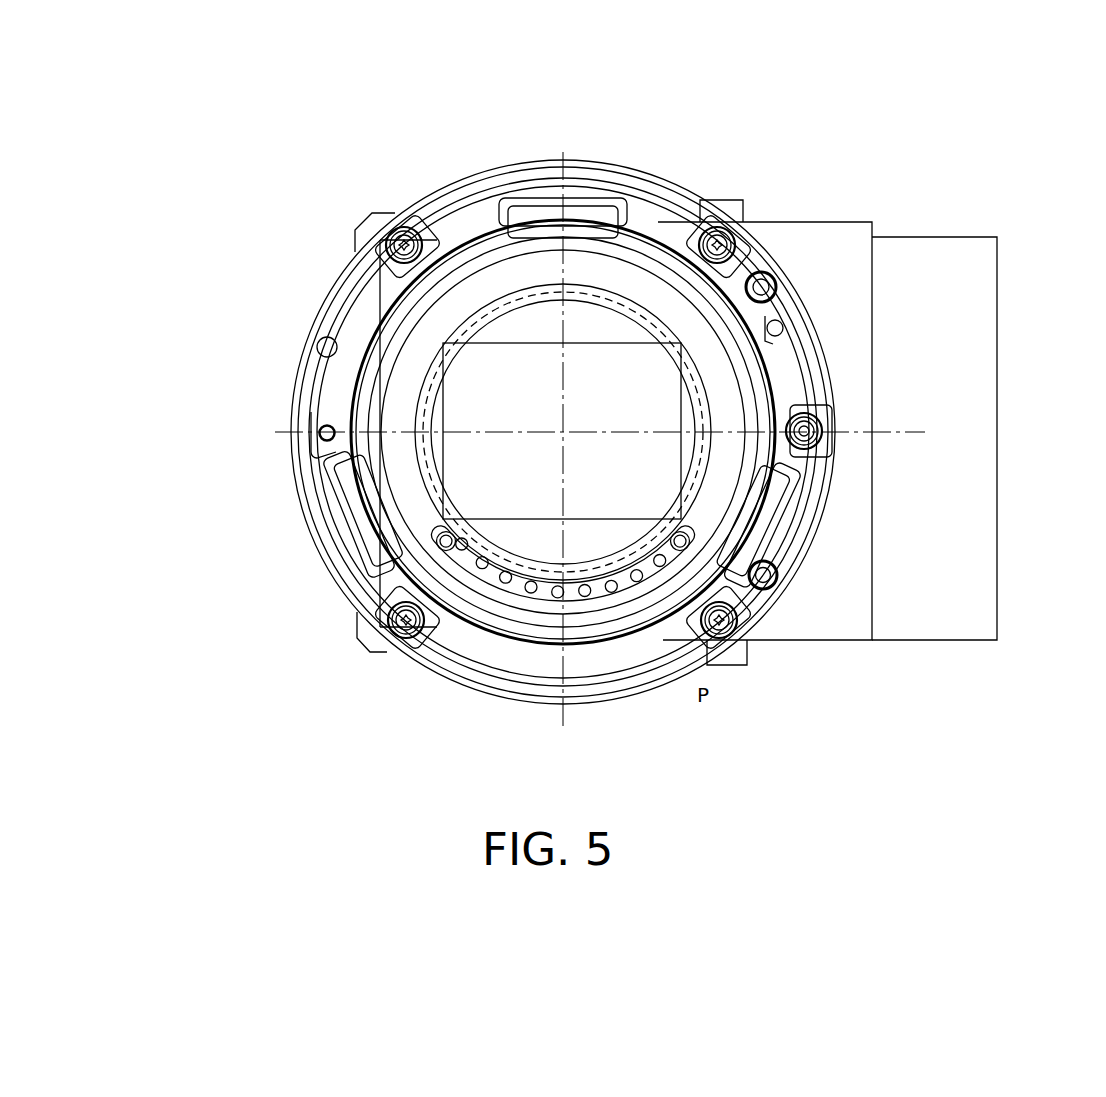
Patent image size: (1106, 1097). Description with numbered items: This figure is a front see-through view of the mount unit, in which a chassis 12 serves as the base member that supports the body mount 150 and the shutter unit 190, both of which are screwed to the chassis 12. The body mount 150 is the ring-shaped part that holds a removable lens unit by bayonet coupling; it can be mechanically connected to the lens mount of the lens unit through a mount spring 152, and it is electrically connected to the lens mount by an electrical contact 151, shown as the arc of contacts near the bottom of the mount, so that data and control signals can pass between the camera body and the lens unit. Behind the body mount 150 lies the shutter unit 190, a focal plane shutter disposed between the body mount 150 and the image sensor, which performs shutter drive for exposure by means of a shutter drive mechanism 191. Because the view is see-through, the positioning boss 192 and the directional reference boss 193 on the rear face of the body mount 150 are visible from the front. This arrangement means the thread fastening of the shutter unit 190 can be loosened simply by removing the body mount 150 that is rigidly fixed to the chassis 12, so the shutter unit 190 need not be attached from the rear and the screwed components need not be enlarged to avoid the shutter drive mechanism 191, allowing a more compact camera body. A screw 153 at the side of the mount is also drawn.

The chassis 12 is at (375, 223).
The body mount 150 is at (347, 265).
The electrical contact 151 is at (565, 596).
The mount spring 152 is at (347, 295).
The mount screw 153 is at (808, 436).
The shutter unit 190 is at (805, 610).
The shutter drive mechanism 191 is at (917, 608).
The positioning boss 192 is at (766, 275).
The directional reference boss 193 is at (775, 593).